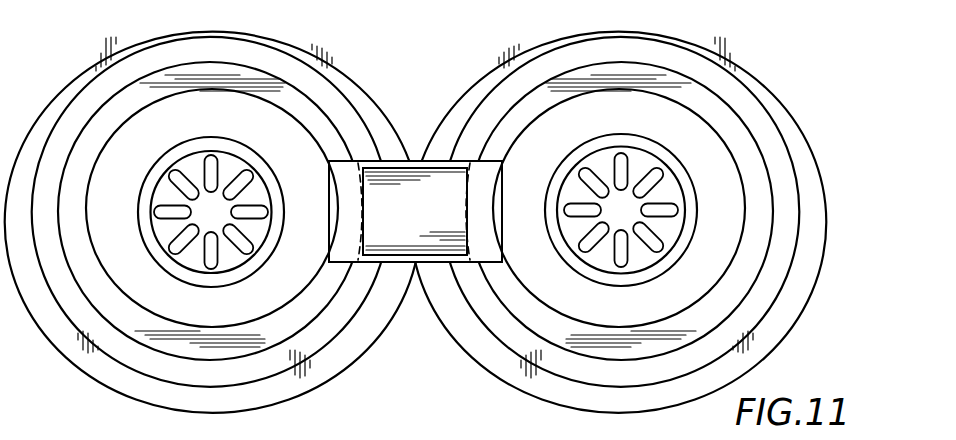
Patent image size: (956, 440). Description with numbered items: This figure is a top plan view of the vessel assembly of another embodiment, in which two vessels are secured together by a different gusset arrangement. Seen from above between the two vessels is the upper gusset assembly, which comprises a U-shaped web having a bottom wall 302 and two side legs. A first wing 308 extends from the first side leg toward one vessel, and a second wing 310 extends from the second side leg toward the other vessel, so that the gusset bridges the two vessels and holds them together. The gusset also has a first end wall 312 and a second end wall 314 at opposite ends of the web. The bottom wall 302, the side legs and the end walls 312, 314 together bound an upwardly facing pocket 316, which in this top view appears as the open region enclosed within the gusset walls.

The bottom wall 302 is at (374, 245).
The first wing 308 is at (332, 162).
The second wing 310 is at (619, 222).
The first end wall 312 is at (404, 160).
The second end wall 314 is at (409, 263).
The upwardly facing pocket 316 is at (382, 243).